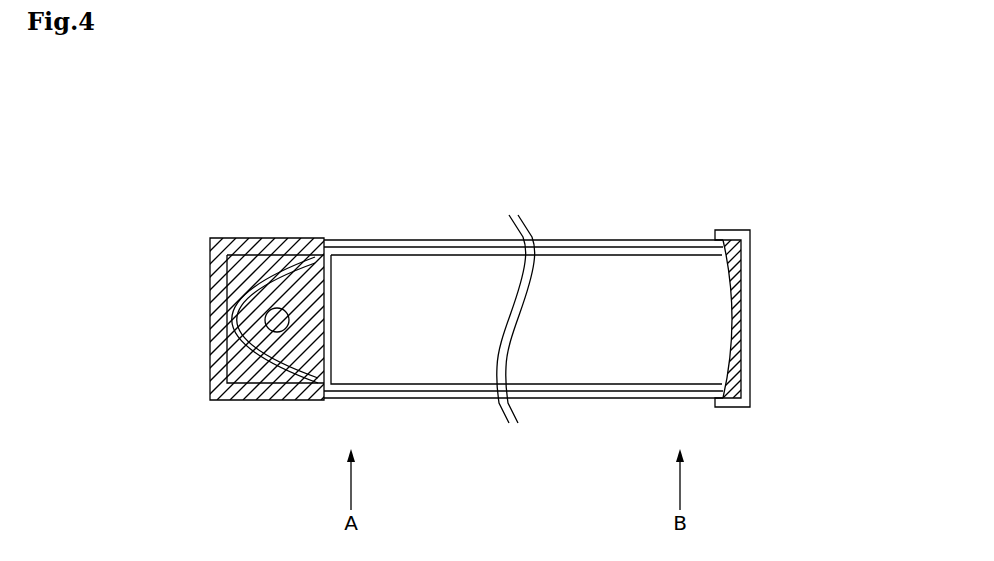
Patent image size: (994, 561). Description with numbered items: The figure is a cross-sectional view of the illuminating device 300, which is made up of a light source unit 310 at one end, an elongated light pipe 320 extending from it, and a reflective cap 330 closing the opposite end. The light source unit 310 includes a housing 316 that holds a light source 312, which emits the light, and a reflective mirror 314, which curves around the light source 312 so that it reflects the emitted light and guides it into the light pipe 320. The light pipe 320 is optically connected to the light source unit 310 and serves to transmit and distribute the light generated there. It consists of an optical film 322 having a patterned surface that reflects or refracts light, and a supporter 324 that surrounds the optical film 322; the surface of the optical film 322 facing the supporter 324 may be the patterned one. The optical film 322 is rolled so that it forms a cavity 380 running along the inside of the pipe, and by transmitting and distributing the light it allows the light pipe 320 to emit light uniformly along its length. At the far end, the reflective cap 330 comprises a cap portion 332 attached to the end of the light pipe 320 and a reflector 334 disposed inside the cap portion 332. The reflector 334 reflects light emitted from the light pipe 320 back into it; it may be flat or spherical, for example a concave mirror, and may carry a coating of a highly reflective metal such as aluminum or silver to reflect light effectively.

The illuminating device 300 is at (822, 124).
The light source unit 310 is at (215, 470).
The light source 312 is at (277, 321).
The reflective mirror 314 is at (252, 357).
The housing 316 is at (245, 400).
The light pipe 320 is at (615, 187).
The optical film 322 is at (663, 252).
The supporter 324 is at (610, 243).
The reflective cap 330 is at (842, 320).
The cap portion 332 is at (737, 320).
The reflector 334 is at (747, 358).
The cavity 380 is at (437, 360).